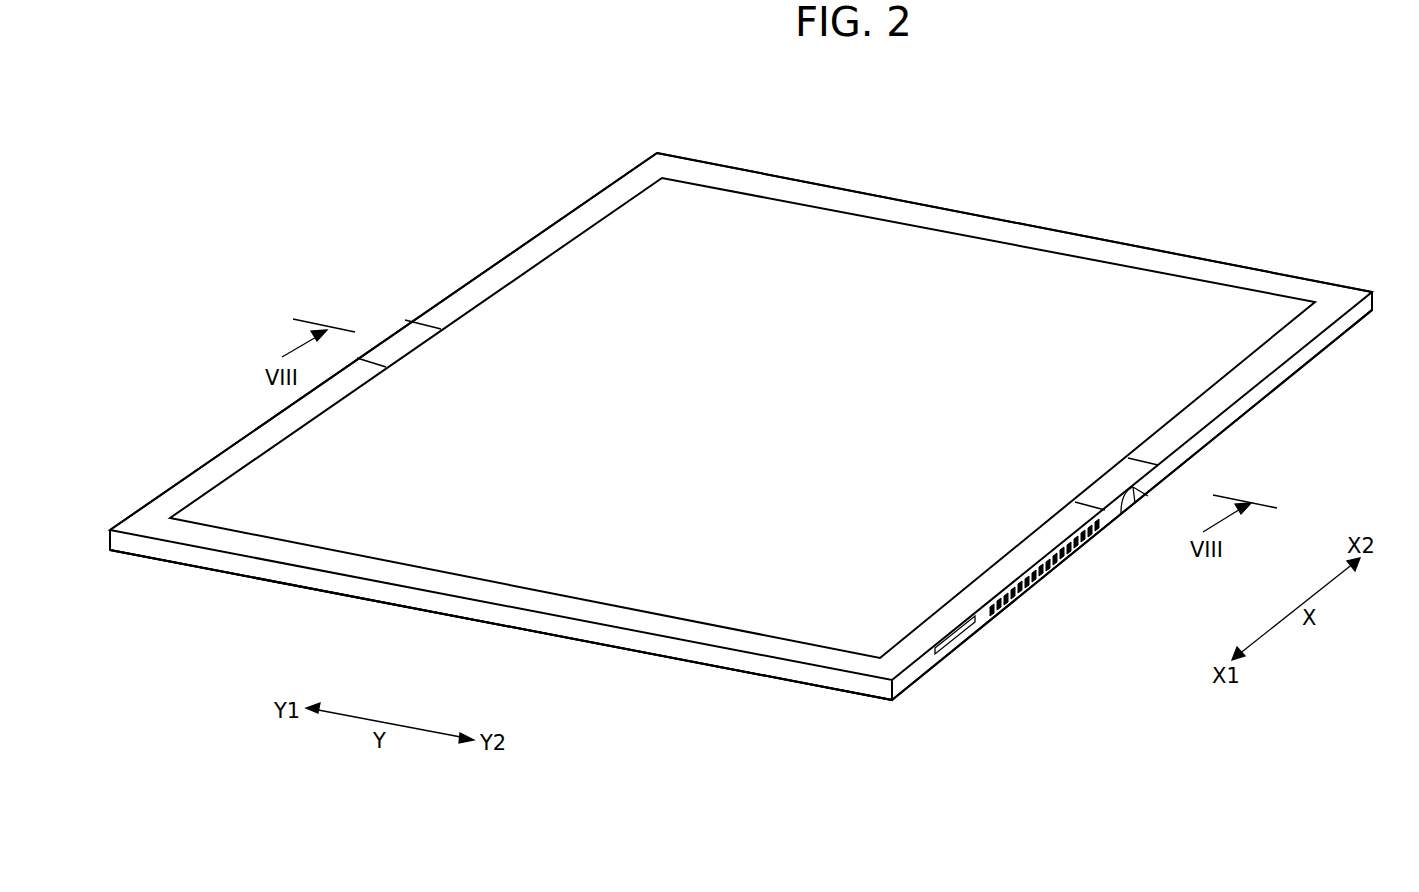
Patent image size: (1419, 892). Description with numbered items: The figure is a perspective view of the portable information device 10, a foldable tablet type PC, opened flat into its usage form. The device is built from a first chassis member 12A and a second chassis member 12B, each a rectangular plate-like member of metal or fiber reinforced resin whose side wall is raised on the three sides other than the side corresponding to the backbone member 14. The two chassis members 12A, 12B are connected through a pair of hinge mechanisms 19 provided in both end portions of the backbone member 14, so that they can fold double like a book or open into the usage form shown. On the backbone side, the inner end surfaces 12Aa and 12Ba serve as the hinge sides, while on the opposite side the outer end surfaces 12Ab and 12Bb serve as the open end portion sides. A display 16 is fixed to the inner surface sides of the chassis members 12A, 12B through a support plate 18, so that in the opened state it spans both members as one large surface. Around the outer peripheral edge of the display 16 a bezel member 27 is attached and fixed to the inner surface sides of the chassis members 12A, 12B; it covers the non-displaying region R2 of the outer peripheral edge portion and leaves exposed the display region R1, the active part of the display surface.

The portable information device 10 is at (242, 167).
The first chassis member 12A is at (253, 420).
The second chassis member 12B is at (530, 232).
The inner end surface 12Aa is at (1150, 497).
The outer end surface 12Ab is at (627, 640).
The inner end surface 12Ba is at (1120, 500).
The outer end surface 12Bb is at (1375, 300).
The backbone member 14 is at (755, 415).
The display 16 is at (803, 225).
The support plate 18 is at (907, 258).
The hinge mechanism 19 is at (395, 342).
The bezel member 27 is at (957, 618).
The display region R1 is at (402, 552).
The non-displaying region R2 is at (1012, 230).